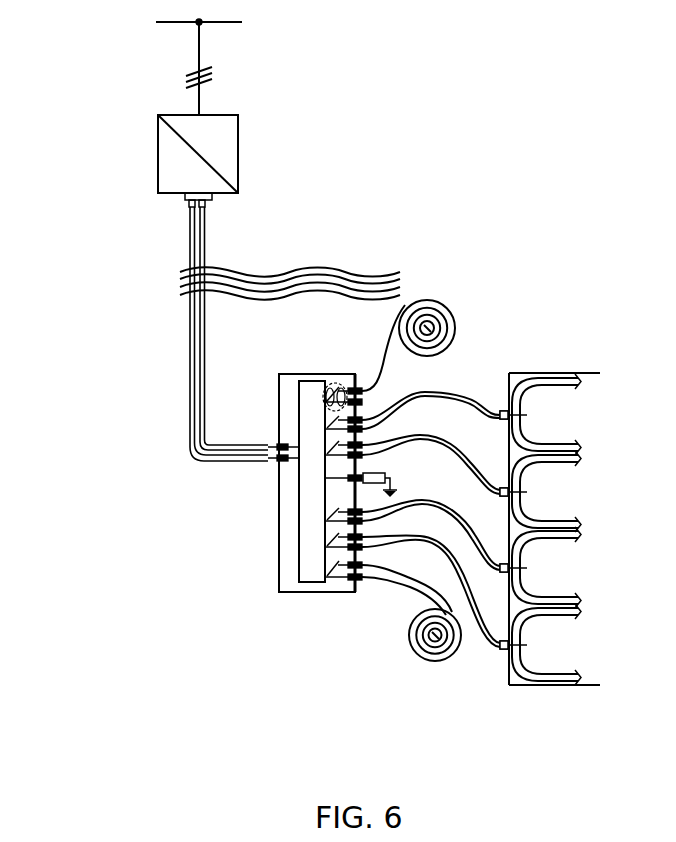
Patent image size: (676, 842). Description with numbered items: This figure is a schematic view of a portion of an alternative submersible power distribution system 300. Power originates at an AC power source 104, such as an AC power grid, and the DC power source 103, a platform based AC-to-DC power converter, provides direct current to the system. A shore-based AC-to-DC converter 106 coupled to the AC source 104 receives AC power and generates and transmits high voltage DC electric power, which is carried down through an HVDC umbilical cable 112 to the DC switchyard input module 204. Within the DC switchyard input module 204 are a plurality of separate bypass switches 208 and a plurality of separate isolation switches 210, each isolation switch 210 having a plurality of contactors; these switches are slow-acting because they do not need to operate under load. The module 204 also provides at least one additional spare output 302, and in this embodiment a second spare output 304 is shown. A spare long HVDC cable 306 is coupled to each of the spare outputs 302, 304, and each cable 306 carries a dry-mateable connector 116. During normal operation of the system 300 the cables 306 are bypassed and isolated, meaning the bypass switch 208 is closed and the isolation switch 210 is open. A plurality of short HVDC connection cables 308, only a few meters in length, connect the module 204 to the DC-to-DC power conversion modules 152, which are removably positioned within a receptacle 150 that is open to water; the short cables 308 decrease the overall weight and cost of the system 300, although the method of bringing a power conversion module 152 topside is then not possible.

The alternative submersible power distribution system 300 is at (110, 75).
The AC power source 104 is at (243, 22).
The DC power source 103 is at (229, 68).
The AC-to-DC converter 106 is at (238, 165).
The HVDC umbilical cable 112 is at (189, 387).
The DC switchyard input module 204 is at (287, 508).
The bypass switch 208 is at (320, 383).
The isolation switch 210 is at (336, 383).
The spare output 302 is at (353, 380).
The second spare output 304 is at (343, 592).
The dry-mateable connector 116 is at (427, 302).
The spare long HVDC cable 306 is at (455, 315).
The short HVDC connection cable 308 is at (474, 396).
The receptacle 150 is at (556, 686).
The DC-to-DC power conversion module 152 is at (528, 415).